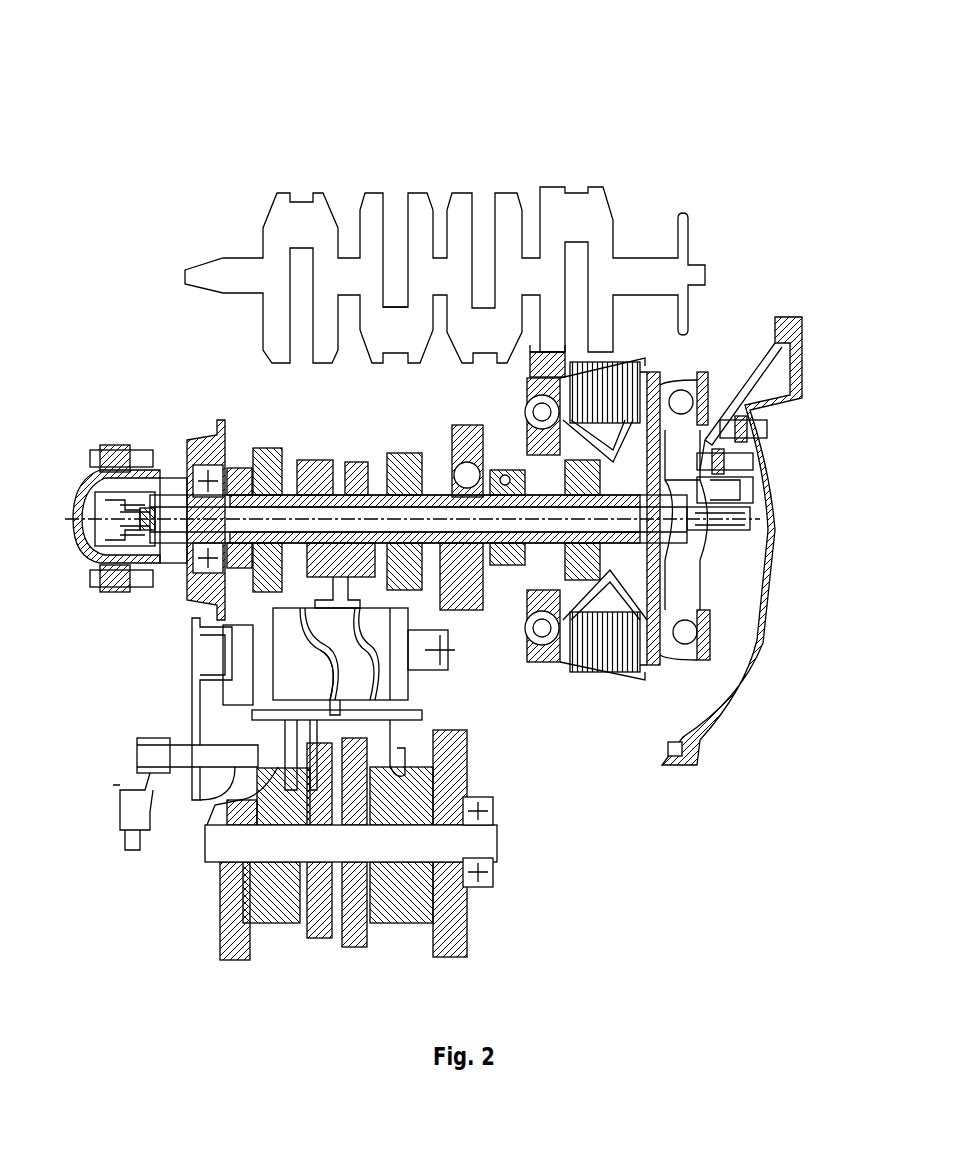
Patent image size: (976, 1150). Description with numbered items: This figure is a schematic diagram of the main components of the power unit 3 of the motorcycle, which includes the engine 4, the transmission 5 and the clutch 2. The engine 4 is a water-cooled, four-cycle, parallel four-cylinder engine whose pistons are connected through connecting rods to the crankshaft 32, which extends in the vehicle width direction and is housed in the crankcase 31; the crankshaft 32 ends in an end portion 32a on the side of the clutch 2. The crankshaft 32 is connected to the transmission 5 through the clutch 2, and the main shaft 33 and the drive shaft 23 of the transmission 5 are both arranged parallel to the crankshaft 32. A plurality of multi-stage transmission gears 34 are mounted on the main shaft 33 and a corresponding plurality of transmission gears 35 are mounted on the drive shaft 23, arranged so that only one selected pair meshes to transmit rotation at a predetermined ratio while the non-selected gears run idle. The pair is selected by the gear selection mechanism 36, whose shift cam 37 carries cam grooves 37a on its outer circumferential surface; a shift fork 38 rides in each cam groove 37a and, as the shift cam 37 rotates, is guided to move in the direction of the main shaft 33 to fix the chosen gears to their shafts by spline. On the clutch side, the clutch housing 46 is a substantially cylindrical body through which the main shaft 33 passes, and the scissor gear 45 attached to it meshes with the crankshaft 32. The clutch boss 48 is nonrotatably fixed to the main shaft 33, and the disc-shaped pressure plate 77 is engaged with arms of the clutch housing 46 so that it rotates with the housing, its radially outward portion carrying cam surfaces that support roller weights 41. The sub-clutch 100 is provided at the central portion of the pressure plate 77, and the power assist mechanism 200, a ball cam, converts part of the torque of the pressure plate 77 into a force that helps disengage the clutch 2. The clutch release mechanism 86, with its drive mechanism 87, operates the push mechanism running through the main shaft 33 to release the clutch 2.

The clutch 2 is at (730, 318).
The power unit 3 is at (618, 88).
The engine 4 is at (322, 176).
The transmission 5 is at (577, 773).
The drive shaft 23 is at (487, 842).
The crankcase 31 is at (737, 712).
The crankshaft 32 is at (507, 198).
The crankshaft end portion 32a is at (557, 353).
The main shaft 33 is at (432, 540).
The multi-stage transmission gears 34 is at (382, 460).
The transmission gears 35 is at (470, 762).
The gear selection mechanism 36 is at (180, 650).
The shift cam 37 is at (270, 625).
The cam grooves 37a is at (405, 648).
The shift fork 38 is at (398, 748).
The roller weight 41 is at (660, 556).
The scissor gear 45 is at (558, 690).
The clutch housing 46 is at (627, 675).
The clutch boss 48 is at (585, 672).
The pressure plate 77 is at (680, 658).
The clutch release mechanism 86 is at (69, 490).
The drive mechanism 87 is at (131, 441).
The sub-clutch 100 is at (675, 582).
The power assist mechanism 200 is at (748, 502).